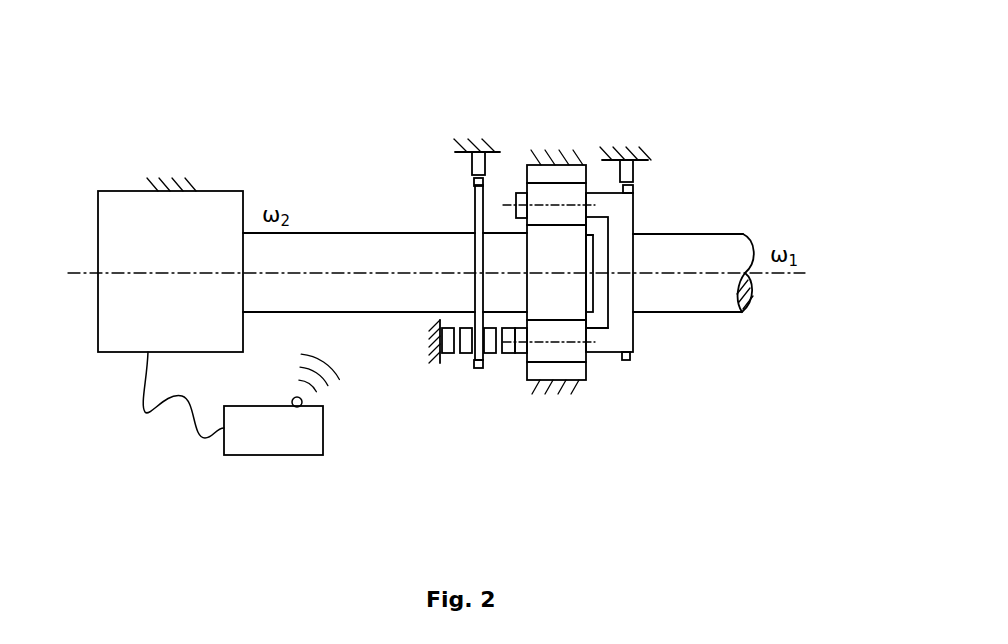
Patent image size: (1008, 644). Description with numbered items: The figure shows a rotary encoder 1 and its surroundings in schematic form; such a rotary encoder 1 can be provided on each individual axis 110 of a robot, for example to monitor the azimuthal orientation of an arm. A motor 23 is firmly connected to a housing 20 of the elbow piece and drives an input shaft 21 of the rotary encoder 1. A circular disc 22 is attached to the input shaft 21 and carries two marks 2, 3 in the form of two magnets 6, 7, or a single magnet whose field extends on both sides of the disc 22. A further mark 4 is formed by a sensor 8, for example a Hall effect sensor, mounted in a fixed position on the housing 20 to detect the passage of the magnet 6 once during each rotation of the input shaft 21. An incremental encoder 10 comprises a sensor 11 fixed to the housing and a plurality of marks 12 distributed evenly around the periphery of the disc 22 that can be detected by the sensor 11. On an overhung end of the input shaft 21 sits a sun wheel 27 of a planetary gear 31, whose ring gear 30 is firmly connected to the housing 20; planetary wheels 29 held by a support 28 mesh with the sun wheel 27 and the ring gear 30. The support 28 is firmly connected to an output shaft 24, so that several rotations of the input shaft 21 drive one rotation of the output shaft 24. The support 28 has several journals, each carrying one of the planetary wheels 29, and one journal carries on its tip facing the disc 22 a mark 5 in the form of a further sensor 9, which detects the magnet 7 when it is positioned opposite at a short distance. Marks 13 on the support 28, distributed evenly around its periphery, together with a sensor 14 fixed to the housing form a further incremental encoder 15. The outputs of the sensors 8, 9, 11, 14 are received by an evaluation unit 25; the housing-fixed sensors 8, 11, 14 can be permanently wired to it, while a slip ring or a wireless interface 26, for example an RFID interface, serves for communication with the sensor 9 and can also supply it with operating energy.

The rotary encoder 1 is at (752, 74).
The mark 2 is at (428, 446).
The mark 3 is at (484, 446).
The mark 4 is at (383, 438).
The mark 5 is at (546, 446).
The magnet 6 is at (463, 356).
The magnet 7 is at (488, 356).
The sensor 8 is at (438, 363).
The sensor 9 is at (508, 353).
The incremental encoder 10 is at (465, 100).
The sensor 11 is at (480, 163).
The mark 12 is at (473, 178).
The mark 13 is at (635, 187).
The sensor 14 is at (627, 170).
The incremental encoder 15 is at (652, 103).
The housing 20 is at (173, 163).
The input shaft 21 is at (367, 248).
The disc 22 is at (478, 222).
The motor 23 is at (120, 212).
The output shaft 24 is at (732, 250).
The evaluation unit 25 is at (248, 437).
The wireless interface 26 is at (297, 407).
The sun wheel 27 is at (573, 302).
The support 28 is at (615, 338).
The planetary wheel 29 is at (578, 348).
The ring gear 30 is at (557, 173).
The gear 31 is at (590, 449).
The axis 110 is at (773, 273).